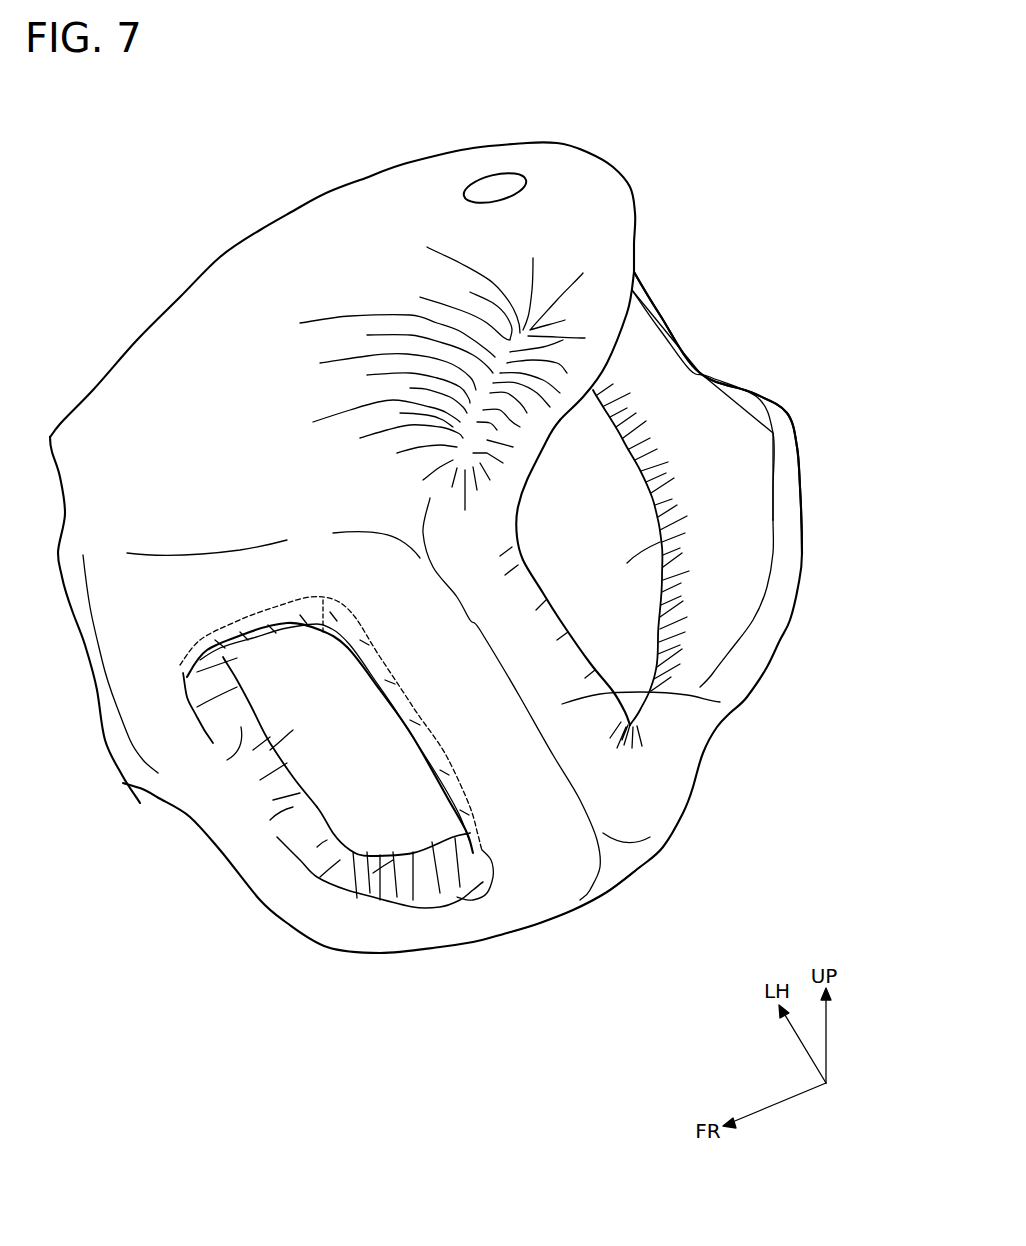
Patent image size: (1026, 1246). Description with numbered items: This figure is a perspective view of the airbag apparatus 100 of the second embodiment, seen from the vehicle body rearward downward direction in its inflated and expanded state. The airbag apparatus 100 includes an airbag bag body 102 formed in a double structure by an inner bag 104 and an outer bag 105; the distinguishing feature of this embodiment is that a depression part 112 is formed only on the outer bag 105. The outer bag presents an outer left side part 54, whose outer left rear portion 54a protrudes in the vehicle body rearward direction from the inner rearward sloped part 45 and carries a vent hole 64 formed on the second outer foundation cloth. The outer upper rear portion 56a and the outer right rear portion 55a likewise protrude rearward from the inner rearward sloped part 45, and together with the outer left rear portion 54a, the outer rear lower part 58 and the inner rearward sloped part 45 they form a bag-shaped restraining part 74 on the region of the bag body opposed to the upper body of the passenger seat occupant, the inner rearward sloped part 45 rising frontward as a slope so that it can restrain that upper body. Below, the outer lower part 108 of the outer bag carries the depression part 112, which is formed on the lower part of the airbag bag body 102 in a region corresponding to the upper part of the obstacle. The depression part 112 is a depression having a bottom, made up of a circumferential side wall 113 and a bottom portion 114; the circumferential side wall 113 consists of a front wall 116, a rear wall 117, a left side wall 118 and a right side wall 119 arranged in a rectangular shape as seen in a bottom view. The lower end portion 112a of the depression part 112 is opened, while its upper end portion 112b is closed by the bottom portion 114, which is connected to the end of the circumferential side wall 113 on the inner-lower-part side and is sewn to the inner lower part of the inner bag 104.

The airbag apparatus 100 is at (324, 165).
The outer left side part 54 is at (237, 290).
The outer left rear portion 54a is at (603, 267).
The outer upper rear portion 56a is at (643, 345).
The vent hole 64 is at (483, 190).
The restraining part 74 is at (655, 495).
The airbag bag body 102 is at (853, 313).
The inner bag 104 is at (749, 377).
The outer bag 105 is at (645, 477).
The inner rearward sloped part 45 is at (662, 540).
The outer right rear portion 55a is at (743, 577).
The outer rear lower part 58 is at (720, 702).
The outer lower part 108 is at (543, 887).
The depression part 112 is at (133, 1003).
The lower end portion 112a is at (437, 897).
The upper end portion 112b is at (373, 873).
The circumferential side wall 113 is at (307, 815).
The bottom portion 114 is at (312, 740).
The front wall 116 is at (388, 710).
The rear wall 117 is at (270, 750).
The left side wall 118 is at (277, 633).
The right side wall 119 is at (398, 885).